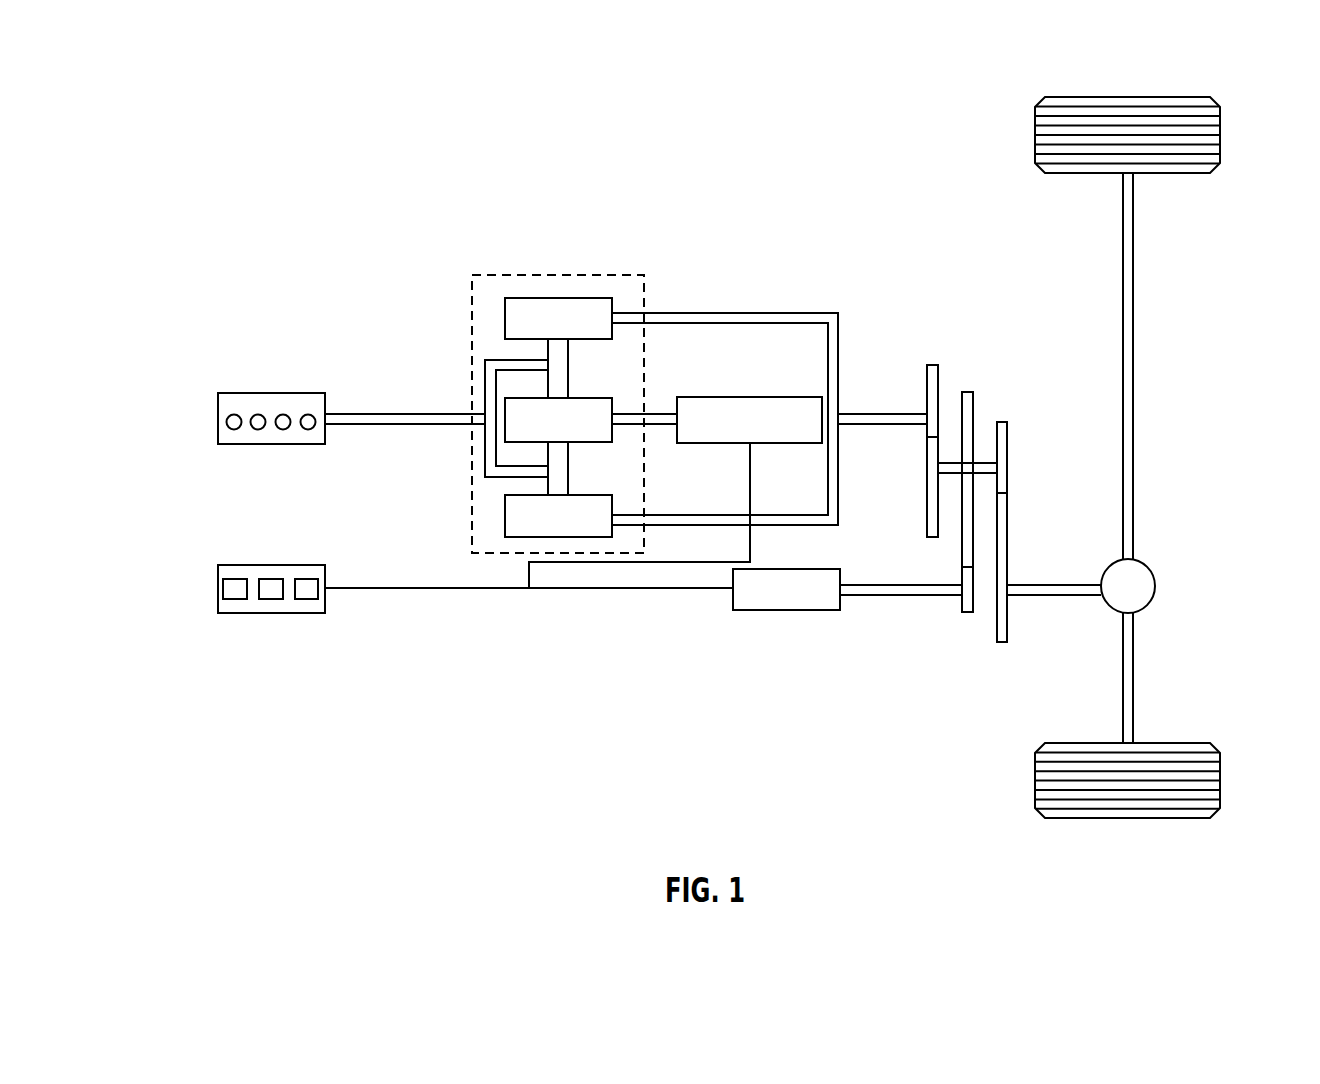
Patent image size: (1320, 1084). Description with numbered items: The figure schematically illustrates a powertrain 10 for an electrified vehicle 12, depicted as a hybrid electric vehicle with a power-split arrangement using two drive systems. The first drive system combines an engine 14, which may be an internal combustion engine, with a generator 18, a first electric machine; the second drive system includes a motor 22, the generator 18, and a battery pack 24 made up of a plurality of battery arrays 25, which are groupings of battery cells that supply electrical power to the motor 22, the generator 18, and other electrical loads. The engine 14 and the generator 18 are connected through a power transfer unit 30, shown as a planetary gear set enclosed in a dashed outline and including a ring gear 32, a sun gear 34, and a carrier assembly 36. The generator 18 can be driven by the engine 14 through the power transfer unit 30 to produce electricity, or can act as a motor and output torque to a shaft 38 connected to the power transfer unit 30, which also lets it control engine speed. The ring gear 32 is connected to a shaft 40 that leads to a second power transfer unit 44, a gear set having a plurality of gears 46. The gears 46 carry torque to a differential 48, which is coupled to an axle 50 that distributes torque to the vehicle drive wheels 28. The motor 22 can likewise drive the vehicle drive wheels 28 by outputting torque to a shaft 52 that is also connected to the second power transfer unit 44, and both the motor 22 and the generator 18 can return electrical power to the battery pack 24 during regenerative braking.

The powertrain 10 is at (184, 212).
The electrified vehicle 12 is at (764, 261).
The engine 14 is at (270, 445).
The generator 18 is at (766, 397).
The motor 22 is at (786, 610).
The battery pack 24 is at (218, 589).
The battery arrays 25 is at (236, 598).
The vehicle drive wheels 28 is at (1220, 140).
The power transfer unit 30 is at (542, 272).
The ring gear 32 is at (570, 298).
The sun gear 34 is at (585, 398).
The carrier assembly 36 is at (485, 452).
The shaft 38 is at (655, 414).
The shaft 40 is at (895, 425).
The second power transfer unit 44 is at (1019, 294).
The gears 46 is at (933, 365).
The differential 48 is at (1156, 582).
The axle 50 is at (1133, 490).
The shaft 52 is at (893, 597).